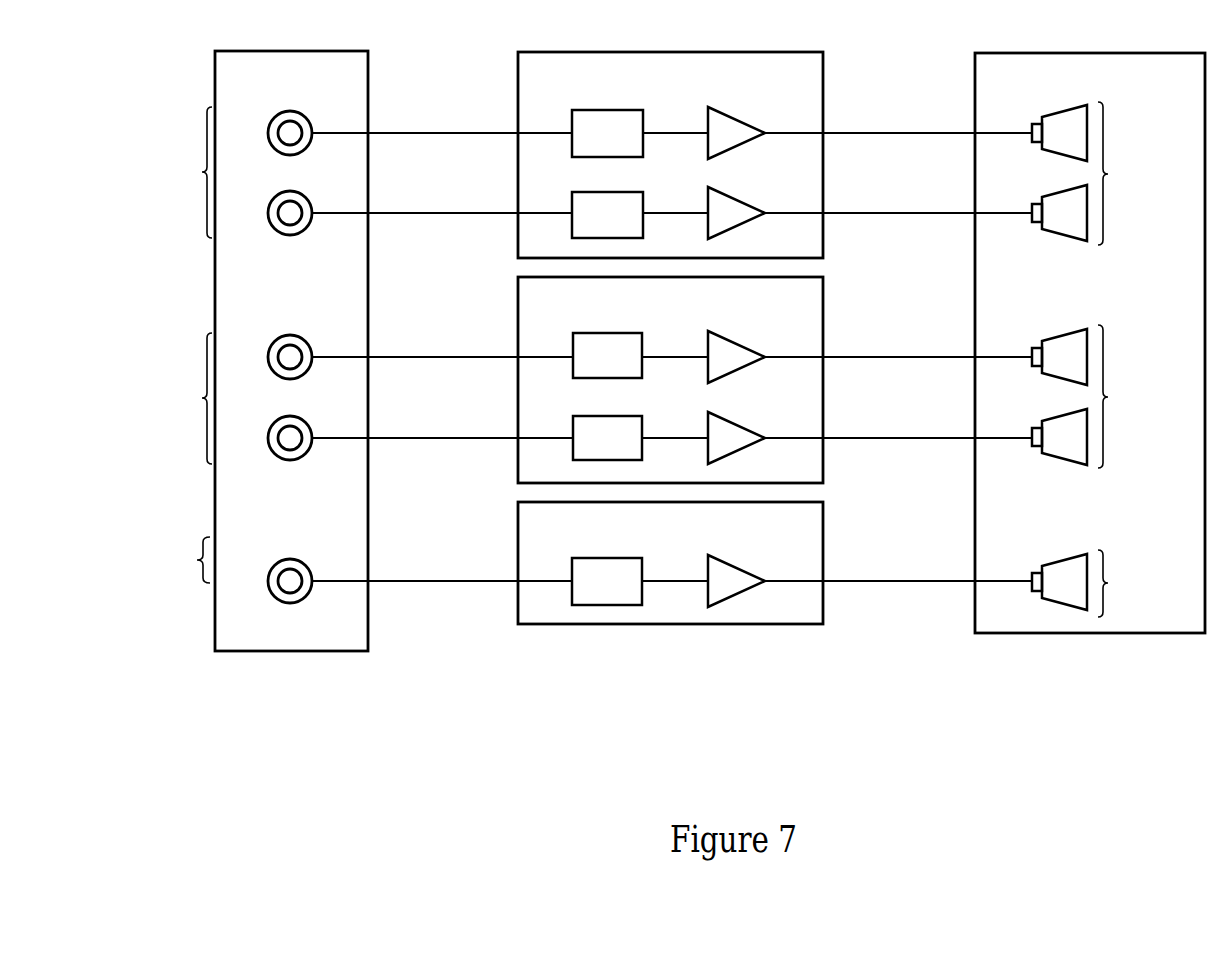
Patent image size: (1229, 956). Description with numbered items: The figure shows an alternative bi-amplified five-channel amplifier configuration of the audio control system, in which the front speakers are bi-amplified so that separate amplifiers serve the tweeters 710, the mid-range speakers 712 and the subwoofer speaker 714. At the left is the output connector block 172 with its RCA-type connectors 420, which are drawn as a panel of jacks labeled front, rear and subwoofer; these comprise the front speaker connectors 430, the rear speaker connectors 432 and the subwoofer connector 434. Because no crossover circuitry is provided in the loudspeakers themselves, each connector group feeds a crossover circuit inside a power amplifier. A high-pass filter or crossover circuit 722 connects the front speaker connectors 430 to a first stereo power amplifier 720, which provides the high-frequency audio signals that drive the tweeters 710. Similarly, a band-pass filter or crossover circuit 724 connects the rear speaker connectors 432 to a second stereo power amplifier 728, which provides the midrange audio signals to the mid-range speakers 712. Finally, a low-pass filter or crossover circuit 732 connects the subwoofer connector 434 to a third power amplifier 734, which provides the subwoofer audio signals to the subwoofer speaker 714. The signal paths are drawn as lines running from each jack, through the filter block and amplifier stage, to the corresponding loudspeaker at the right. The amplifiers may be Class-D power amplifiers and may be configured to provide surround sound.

The output connector block 172 is at (330, 68).
The RCA-type connectors 420 is at (273, 92).
The front speaker connectors 430 is at (202, 172).
The rear speaker connectors 432 is at (202, 398).
The subwoofer connector 434 is at (197, 560).
The first stereo power amplifier 720 is at (783, 94).
The high-pass filter or crossover circuit 722 is at (572, 146).
The second stereo power amplifier 728 is at (756, 316).
The band-pass filter or crossover circuit 724 is at (573, 370).
The third power amplifier 734 is at (763, 541).
The low-pass filter or crossover circuit 732 is at (572, 572).
The tweeters 710 is at (1108, 174).
The mid-range speakers 712 is at (1108, 397).
The subwoofer speaker 714 is at (1108, 583).